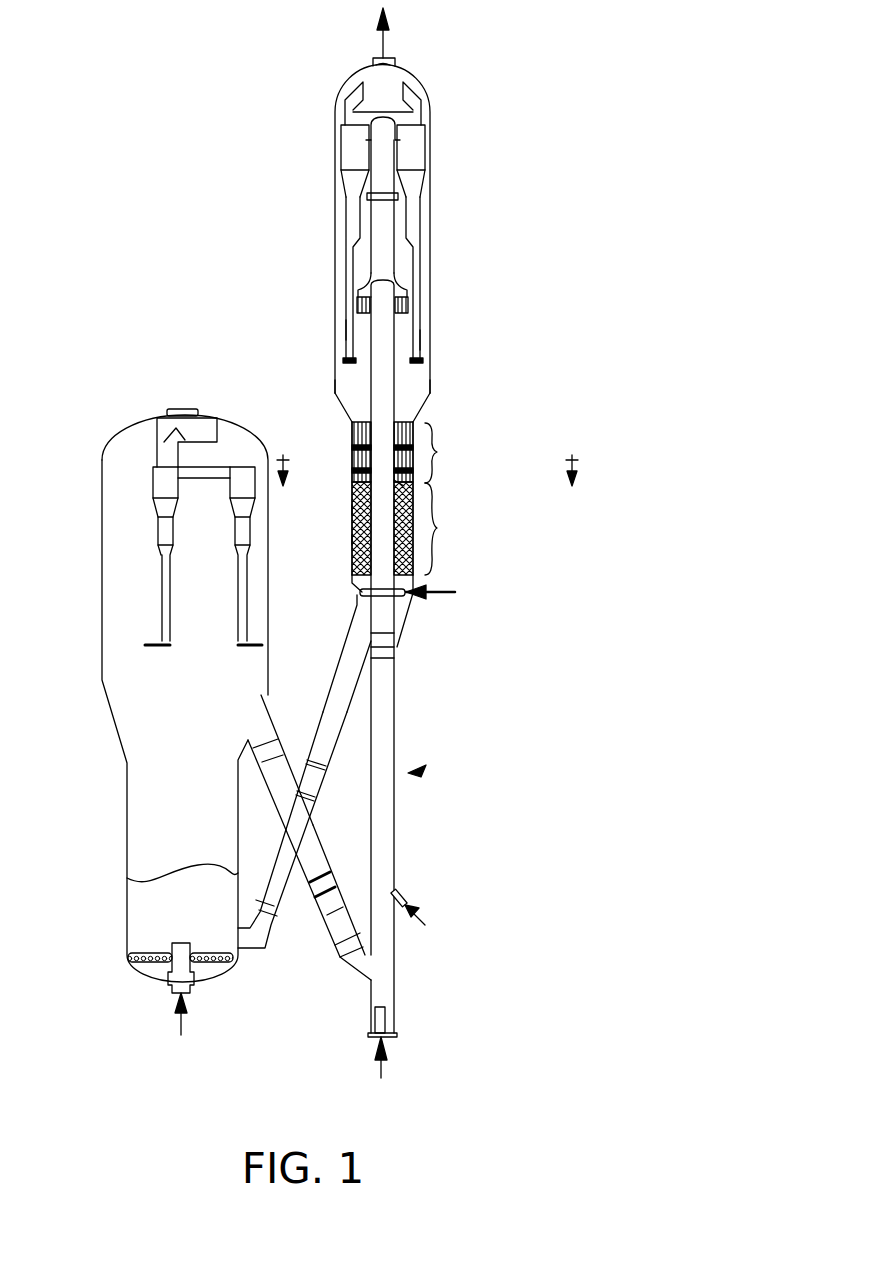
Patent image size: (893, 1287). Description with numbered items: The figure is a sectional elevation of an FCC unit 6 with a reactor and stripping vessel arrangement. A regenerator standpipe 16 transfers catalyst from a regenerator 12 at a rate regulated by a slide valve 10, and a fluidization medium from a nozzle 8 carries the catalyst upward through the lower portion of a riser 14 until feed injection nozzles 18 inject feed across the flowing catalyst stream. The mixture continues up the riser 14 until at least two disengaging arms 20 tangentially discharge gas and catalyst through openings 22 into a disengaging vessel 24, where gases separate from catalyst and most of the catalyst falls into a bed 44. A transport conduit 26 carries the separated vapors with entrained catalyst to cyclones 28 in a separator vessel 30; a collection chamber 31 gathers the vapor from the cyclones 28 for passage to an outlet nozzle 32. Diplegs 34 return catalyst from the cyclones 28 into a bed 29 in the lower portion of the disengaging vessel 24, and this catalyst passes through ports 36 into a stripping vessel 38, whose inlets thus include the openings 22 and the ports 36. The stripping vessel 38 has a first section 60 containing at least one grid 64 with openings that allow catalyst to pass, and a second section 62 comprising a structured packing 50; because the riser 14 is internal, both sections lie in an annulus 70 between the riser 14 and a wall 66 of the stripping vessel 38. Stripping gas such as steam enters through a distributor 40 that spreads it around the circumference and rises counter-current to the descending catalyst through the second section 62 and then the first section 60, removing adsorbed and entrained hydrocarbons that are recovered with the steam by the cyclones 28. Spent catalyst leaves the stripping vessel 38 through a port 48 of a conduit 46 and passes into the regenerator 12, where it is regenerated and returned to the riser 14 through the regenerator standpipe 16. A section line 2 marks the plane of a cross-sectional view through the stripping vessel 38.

The section line 2 is at (435, 468).
The FCC unit 6 is at (415, 769).
The nozzle 8 is at (375, 1013).
The slide valve 10 is at (333, 935).
The regenerator 12 is at (105, 548).
The riser 14 is at (396, 712).
The regenerator standpipe 16 is at (319, 846).
The feed injection nozzles 18 is at (401, 890).
The disengaging arms 20 is at (352, 283).
The openings 22 is at (348, 322).
The disengaging vessel 24 is at (418, 340).
The transport conduit 26 is at (383, 222).
The cyclones 28 is at (348, 185).
The bed 29 is at (360, 392).
The separator vessel 30 is at (431, 113).
The collection chamber 31 is at (396, 70).
The outlet nozzle 32 is at (377, 67).
The diplegs 34 is at (357, 305).
The ports 36 is at (352, 415).
The stripping vessel 38 is at (413, 468).
The distributor 40 is at (362, 592).
The bed 44 is at (407, 392).
The conduit 46 is at (333, 684).
The port 48 is at (352, 632).
The structured packing 50 is at (352, 510).
The first section 60 is at (414, 452).
The second section 62 is at (414, 528).
The grid 64 is at (352, 447).
The wall 66 is at (352, 540).
The annulus 70 is at (413, 482).